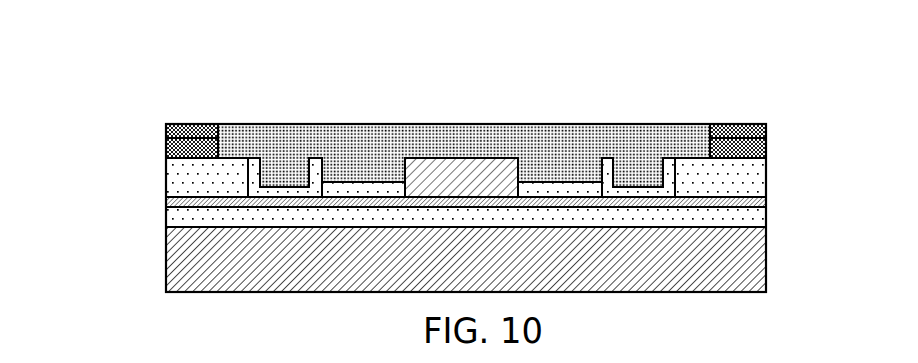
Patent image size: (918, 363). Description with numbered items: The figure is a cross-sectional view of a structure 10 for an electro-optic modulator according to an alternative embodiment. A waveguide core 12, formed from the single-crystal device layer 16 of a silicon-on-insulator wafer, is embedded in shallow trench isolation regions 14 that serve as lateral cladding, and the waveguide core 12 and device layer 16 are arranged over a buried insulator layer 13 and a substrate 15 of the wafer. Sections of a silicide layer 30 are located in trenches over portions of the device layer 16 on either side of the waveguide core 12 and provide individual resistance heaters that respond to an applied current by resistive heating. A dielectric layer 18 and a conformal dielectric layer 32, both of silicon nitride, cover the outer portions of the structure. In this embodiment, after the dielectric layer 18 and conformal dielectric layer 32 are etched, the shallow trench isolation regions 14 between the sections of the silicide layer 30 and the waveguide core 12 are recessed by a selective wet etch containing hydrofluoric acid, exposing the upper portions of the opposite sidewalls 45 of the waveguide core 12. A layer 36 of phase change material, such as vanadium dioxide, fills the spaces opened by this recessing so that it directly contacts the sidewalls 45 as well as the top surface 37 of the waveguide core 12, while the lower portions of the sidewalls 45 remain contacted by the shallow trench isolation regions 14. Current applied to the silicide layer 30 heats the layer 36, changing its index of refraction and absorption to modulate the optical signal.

The structure 10 is at (138, 55).
The waveguide core 12 is at (457, 178).
The buried insulator layer 13 is at (740, 222).
The shallow trench isolation regions 14 is at (737, 180).
The substrate 15 is at (175, 265).
The device layer 16 is at (187, 204).
The dielectric layer 18 is at (170, 143).
The silicide layer 30 is at (288, 193).
The conformal dielectric layer 32 is at (740, 128).
The layer 36 is at (497, 143).
The top surface 37 is at (417, 157).
The sidewalls 45 is at (403, 165).